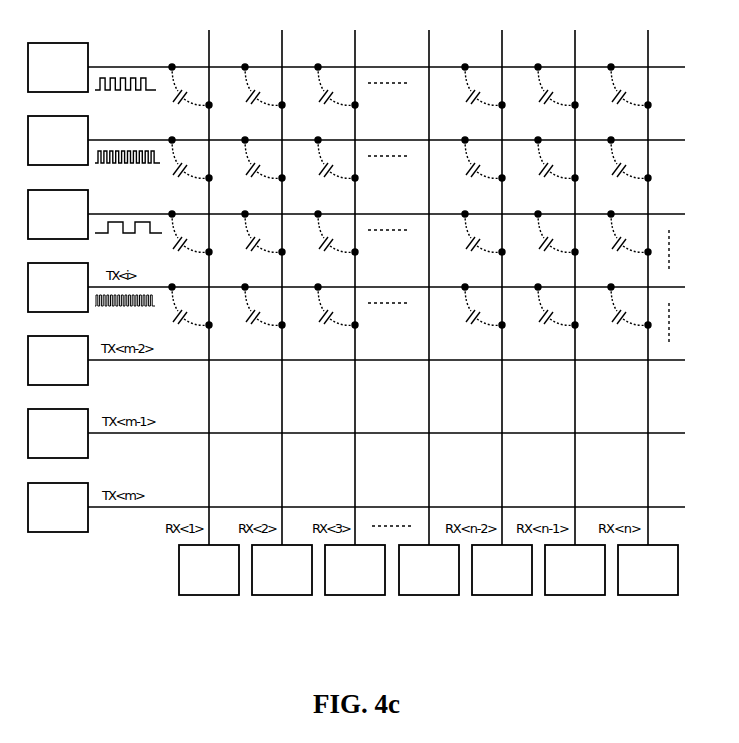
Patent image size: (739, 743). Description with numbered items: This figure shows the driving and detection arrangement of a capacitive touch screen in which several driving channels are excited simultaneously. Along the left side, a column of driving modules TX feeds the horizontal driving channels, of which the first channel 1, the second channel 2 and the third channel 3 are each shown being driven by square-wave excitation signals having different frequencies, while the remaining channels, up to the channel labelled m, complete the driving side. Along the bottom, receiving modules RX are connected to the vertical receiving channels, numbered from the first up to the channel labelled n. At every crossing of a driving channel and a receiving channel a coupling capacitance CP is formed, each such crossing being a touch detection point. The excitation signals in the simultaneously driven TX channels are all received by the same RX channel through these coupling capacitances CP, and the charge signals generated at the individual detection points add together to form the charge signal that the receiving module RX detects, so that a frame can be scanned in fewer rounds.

The first driving channel TX 1 is at (386, 69).
The second driving channel TX 2 is at (386, 142).
The third driving channel TX 3 is at (386, 214).
The driving module TX is at (58, 287).
The receiving module RX is at (428, 570).
The coupling capacitance CP is at (408, 208).